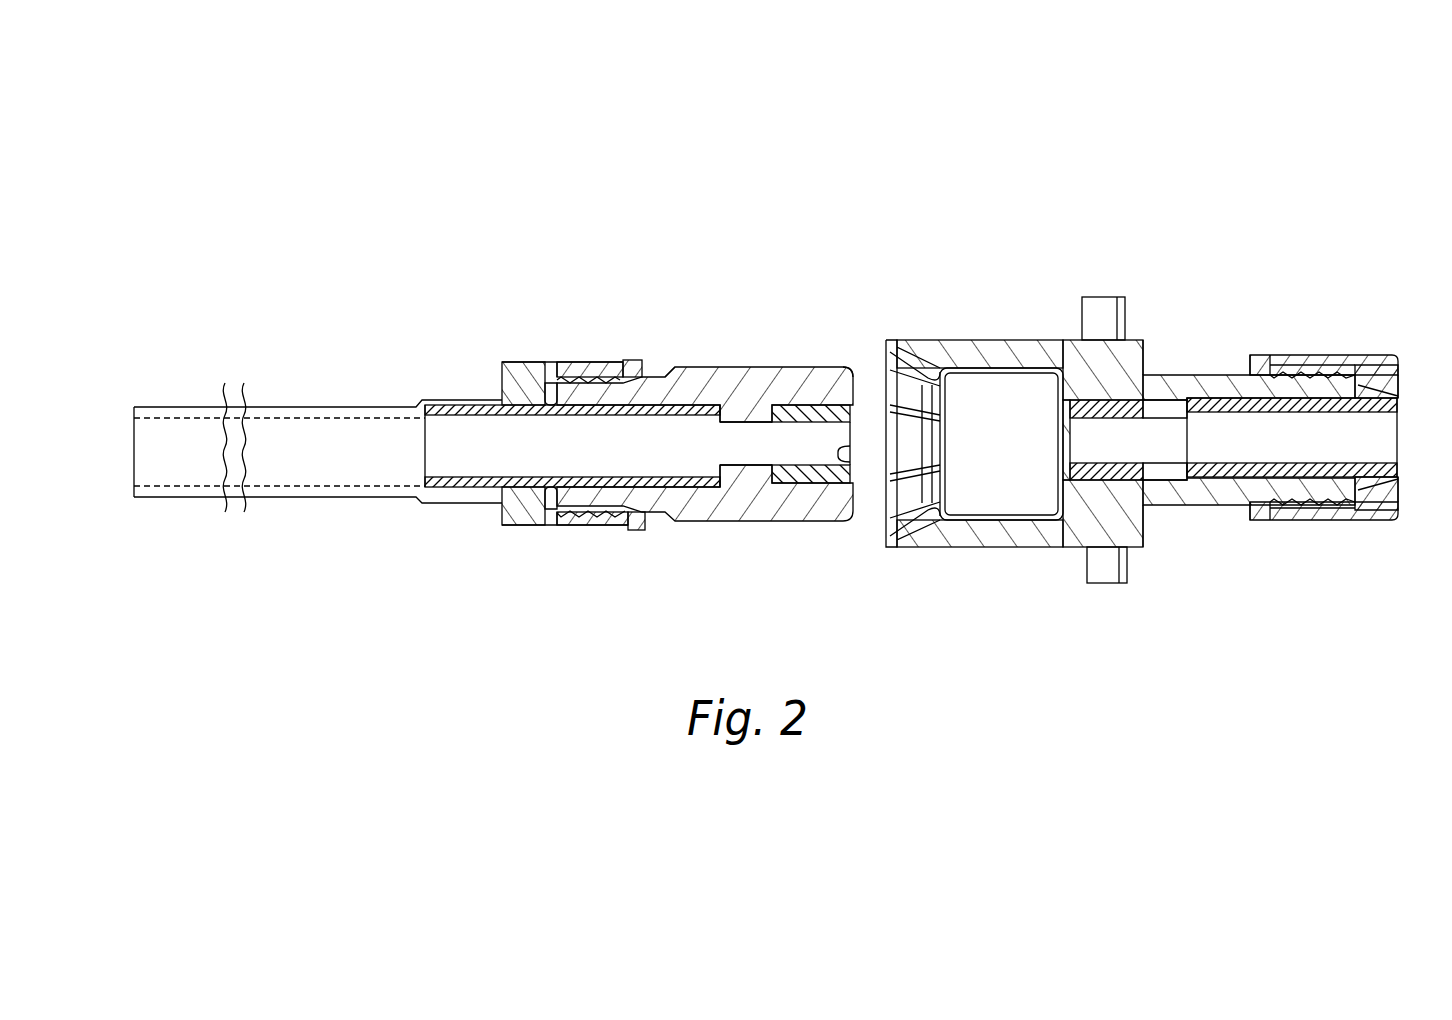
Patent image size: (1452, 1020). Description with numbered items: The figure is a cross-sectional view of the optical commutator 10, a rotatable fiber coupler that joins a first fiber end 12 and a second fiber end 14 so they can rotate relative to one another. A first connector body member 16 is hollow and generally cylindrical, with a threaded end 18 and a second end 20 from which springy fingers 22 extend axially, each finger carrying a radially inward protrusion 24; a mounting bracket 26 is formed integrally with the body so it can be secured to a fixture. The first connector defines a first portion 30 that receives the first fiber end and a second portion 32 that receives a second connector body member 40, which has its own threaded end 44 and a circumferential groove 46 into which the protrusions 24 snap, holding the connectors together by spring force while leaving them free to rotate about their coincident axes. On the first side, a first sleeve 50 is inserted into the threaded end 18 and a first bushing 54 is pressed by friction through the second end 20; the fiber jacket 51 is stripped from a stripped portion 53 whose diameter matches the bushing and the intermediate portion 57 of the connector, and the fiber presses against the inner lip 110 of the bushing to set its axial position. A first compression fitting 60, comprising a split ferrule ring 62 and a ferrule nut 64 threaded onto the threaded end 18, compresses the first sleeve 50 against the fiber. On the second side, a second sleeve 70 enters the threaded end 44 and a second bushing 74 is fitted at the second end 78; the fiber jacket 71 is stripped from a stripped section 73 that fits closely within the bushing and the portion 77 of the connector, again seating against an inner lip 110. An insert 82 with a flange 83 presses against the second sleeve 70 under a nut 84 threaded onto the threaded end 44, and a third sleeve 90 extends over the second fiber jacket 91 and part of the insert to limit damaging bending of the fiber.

The optical commutator 10 is at (397, 158).
The first fiber end 12 is at (1398, 437).
The second fiber end 14 is at (180, 420).
The first connector body member 16 is at (1052, 264).
The threaded end 18 is at (1350, 378).
The second end 20 is at (947, 286).
The springy fingers 22 is at (872, 355).
The protrusion 24 is at (926, 360).
The mounting bracket 26 is at (1098, 297).
The first portion 30 is at (1243, 552).
The second portion 32 is at (986, 586).
The second connector body member 40 is at (821, 367).
The threaded end 44 is at (597, 312).
The circumferential groove 46 is at (707, 522).
The first sleeve 50 is at (1287, 497).
The fiber jacket 51 is at (1318, 365).
The stripped portion 53 is at (1157, 440).
The first bushing 54 is at (1090, 503).
The portion 57 is at (1170, 440).
The first compression fitting 60 is at (1295, 328).
The split ferrule ring 62 is at (1377, 497).
The ferrule nut 64 is at (1340, 500).
The second sleeve 70 is at (665, 490).
The fiber jacket 71 is at (652, 383).
The stripped section 73 is at (745, 447).
The second bushing 74 is at (785, 405).
The portion 77 is at (736, 392).
The second end 78 is at (769, 576).
The insert 82 is at (458, 493).
The flange 83 is at (547, 487).
The nut 84 is at (586, 530).
The third sleeve 90 is at (176, 500).
The second fiber jacket 91 is at (362, 410).
The inner lip 110 is at (845, 520).